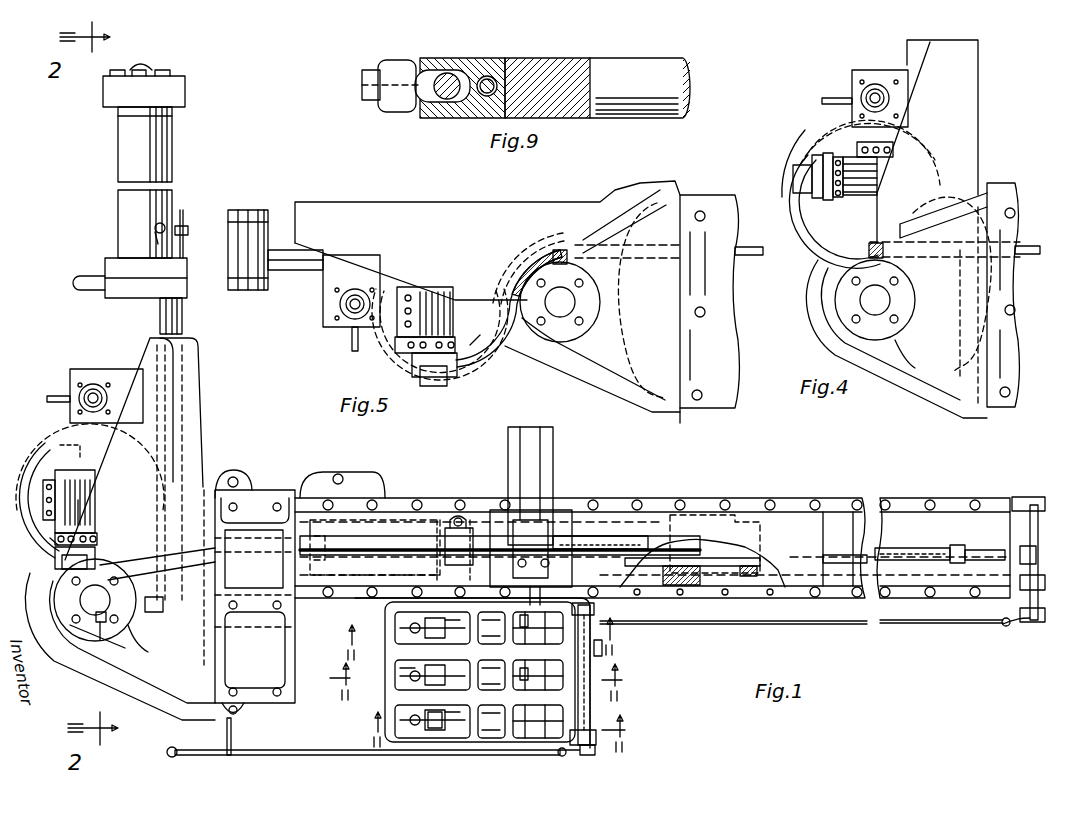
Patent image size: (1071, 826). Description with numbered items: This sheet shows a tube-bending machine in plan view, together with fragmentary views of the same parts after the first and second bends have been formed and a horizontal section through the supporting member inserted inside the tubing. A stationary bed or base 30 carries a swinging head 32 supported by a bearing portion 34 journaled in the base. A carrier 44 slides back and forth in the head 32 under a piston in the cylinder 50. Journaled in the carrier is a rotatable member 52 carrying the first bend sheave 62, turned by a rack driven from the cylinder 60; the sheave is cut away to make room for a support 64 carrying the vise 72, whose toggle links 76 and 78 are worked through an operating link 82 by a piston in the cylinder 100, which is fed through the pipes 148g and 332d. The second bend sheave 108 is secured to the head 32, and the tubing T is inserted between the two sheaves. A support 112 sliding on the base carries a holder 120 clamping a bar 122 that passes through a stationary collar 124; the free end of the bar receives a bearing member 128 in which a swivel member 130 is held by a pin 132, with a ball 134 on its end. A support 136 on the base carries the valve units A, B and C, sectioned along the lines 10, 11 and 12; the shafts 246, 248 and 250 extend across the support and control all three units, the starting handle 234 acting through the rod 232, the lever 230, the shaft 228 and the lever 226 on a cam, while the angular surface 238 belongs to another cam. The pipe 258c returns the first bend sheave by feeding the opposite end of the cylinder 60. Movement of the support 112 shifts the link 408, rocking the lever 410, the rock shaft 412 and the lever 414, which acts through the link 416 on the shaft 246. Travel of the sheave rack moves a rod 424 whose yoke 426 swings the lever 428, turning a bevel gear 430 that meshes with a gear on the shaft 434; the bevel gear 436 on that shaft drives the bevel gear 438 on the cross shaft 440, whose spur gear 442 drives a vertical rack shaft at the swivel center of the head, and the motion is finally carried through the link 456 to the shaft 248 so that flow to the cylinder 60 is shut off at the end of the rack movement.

In FIG. 1, the section line 10- 10 is at (485, 629).
In FIG. 1, the section line 11- 11 is at (481, 674).
In FIG. 1, the section line 12- 12 is at (500, 732).
In FIG. 5, the stationary bed or base 30 is at (715, 200).
In FIG. 4, the stationary bed or base 30 is at (1005, 190).
In FIG. 1, the stationary bed or base 30 is at (306, 496).
In FIG. 5, the swinging head 32 is at (365, 205).
In FIG. 4, the swinging head 32 is at (979, 152).
In FIG. 1, the swinging head 32 is at (204, 399).
In FIG. 5, the bearing portion 34 is at (582, 318).
In FIG. 4, the bearing portion 34 is at (893, 314).
In FIG. 1, the bearing portion 34 is at (72, 592).
In FIG. 5, the carrier 44 is at (338, 328).
In FIG. 4, the carrier 44 is at (852, 80).
In FIG. 1, the carrier 44 is at (118, 369).
In FIG. 1, the cylinder 50 is at (188, 692).
In FIG. 1, the rotatable member 52 is at (78, 456).
In FIG. 5, the cylinder 60 is at (258, 292).
In FIG. 1, the cylinder 60 is at (175, 141).
In FIG. 5, the first bend sheave 62 is at (487, 340).
In FIG. 4, the first bend sheave 62 is at (840, 210).
In FIG. 5, the support 64 is at (446, 336).
In FIG. 4, the support 64 is at (877, 162).
In FIG. 1, the support 64 is at (62, 492).
In FIG. 5, the vise 72 is at (437, 384).
In FIG. 4, the vise 72 is at (800, 178).
In FIG. 1, the vise 72 is at (58, 566).
In FIG. 1, the toggle link 76 is at (46, 497).
In FIG. 1, the toggle link 78 is at (58, 541).
In FIG. 1, the operating link 82 is at (78, 505).
In FIG. 5, the cylinder 100 is at (357, 313).
In FIG. 4, the cylinder 100 is at (875, 88).
In FIG. 1, the cylinder 100 is at (85, 395).
In FIG. 5, the second bend sheave 108 is at (538, 262).
In FIG. 1, the support 112 is at (398, 518).
In FIG. 1, the holder 120 is at (553, 458).
In FIG. 9, the bar 122 is at (617, 64).
In FIG. 5, the bar 122 is at (759, 246).
In FIG. 4, the bar 122 is at (1030, 256).
In FIG. 1, the bar 122 is at (620, 532).
In FIG. 1, the stationary collar 124 is at (462, 525).
In FIG. 9, the bearing member 128 is at (515, 64).
In FIG. 9, the swivel member 130 is at (432, 72).
In FIG. 5, the swivel member 130 is at (568, 250).
In FIG. 4, the swivel member 130 is at (880, 244).
In FIG. 9, the pin 132 is at (480, 77).
In FIG. 9, the ball 134 is at (385, 68).
In FIG. 5, the ball 134 is at (558, 250).
In FIG. 4, the ball 134 is at (872, 246).
In FIG. 1, the support 136 is at (410, 602).
In FIG. 5, the pipe 148g is at (350, 352).
In FIG. 4, the pipe 148g is at (826, 105).
In FIG. 1, the pipe 148g is at (50, 400).
In FIG. 1, the lever 226 is at (592, 612).
In FIG. 1, the shaft 228 is at (602, 650).
In FIG. 1, the lever 230 is at (596, 752).
In FIG. 1, the rod 232 is at (318, 752).
In FIG. 1, the starting handle 234 is at (178, 752).
In FIG. 1, the angular surface 238 is at (430, 712).
In FIG. 1, the shaft 246 is at (548, 688).
In FIG. 1, the shaft 248 is at (545, 635).
In FIG. 1, the shaft 250 is at (520, 630).
In FIG. 1, the pipe 258c is at (87, 278).
In FIG. 5, the pipe 332d is at (341, 300).
In FIG. 4, the pipe 332d is at (868, 88).
In FIG. 1, the pipe 332d is at (85, 390).
In FIG. 1, the link 408 is at (915, 548).
In FIG. 1, the lever 410 is at (1022, 556).
In FIG. 1, the rock shaft 412 is at (1030, 520).
In FIG. 1, the lever 414 is at (1032, 626).
In FIG. 1, the link 416 is at (862, 622).
In FIG. 1, the rod 424 is at (186, 316).
In FIG. 1, the yoke 426 is at (186, 232).
In FIG. 1, the lever 428 is at (182, 226).
In FIG. 1, the bevel gear 430 is at (156, 226).
In FIG. 1, the shaft 434 is at (155, 240).
In FIG. 1, the bevel gear 436 is at (210, 592).
In FIG. 1, the bevel gear 438 is at (104, 620).
In FIG. 1, the cross shaft 440 is at (160, 598).
In FIG. 1, the spur gear 442 is at (84, 630).
In FIG. 1, the link 456 is at (358, 597).
In FIG. 5, the tubing T is at (508, 262).
In FIG. 4, the tubing T is at (832, 238).
In FIG. 1, the valve unit A is at (440, 638).
In FIG. 1, the valve unit B is at (448, 712).
In FIG. 1, the valve unit C is at (425, 670).